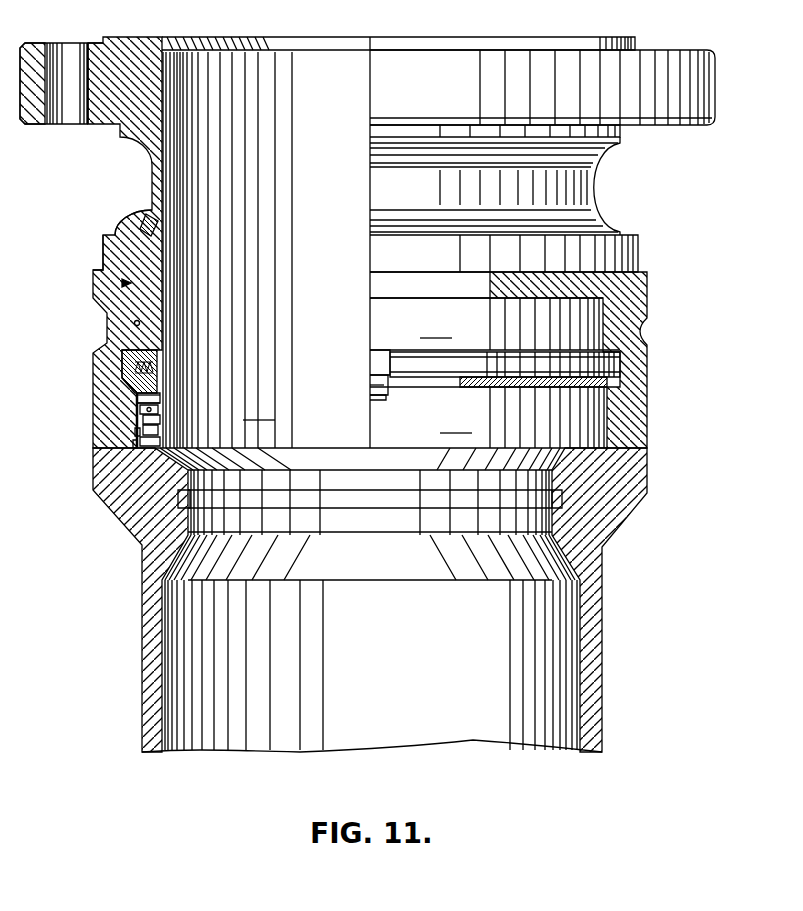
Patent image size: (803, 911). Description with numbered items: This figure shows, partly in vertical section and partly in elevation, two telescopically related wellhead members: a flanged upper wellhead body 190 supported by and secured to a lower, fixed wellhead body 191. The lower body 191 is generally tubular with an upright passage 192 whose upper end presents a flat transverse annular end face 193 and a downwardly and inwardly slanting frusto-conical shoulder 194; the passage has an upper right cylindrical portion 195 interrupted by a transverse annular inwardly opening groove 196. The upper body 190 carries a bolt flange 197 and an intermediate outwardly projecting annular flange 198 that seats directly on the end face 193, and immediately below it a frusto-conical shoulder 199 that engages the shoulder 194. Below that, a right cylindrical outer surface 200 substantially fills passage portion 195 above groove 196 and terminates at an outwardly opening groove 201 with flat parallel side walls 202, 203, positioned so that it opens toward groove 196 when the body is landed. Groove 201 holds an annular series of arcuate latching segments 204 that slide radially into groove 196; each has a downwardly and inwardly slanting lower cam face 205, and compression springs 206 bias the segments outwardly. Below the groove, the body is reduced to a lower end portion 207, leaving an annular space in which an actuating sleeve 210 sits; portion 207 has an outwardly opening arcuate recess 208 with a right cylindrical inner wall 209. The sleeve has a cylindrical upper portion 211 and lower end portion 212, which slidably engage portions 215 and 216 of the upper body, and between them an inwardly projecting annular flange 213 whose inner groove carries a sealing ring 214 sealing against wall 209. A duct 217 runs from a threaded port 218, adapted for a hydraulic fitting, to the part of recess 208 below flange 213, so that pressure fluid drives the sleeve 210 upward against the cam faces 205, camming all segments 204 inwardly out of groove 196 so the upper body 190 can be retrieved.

The upper wellhead body 190 is at (103, 250).
The lower wellhead body 191 is at (131, 537).
The upright passage 192 is at (398, 716).
The transverse annular end face 193 is at (95, 270).
The frusto-conical shoulder 194 is at (124, 283).
The upper right cylindrical portion 195 is at (134, 320).
The inwardly opening groove 196 is at (620, 366).
The bolt flange 197 is at (40, 43).
The annular flange 198 is at (113, 234).
The frusto-conical shoulder 199 is at (378, 282).
The right cylindrical outer surface 200 is at (400, 242).
The outwardly opening groove 201 is at (373, 372).
The side wall 202 is at (375, 352).
The side wall 203 is at (378, 388).
The latching segments 204 is at (122, 368).
The lower cam face 205 is at (137, 405).
The compression springs 206 is at (150, 365).
The lower end portion 207 is at (236, 250).
The arcuate recess 208 is at (377, 402).
The right cylindrical inner wall 209 is at (152, 405).
The actuating sleeve 210 is at (138, 440).
The upper portion of sleeve 211 is at (137, 417).
The lower end portion of sleeve 212 is at (133, 448).
The inwardly projecting annular flange 213 is at (157, 430).
The sealing ring 214 is at (155, 418).
The portion of lower end portion 215 is at (148, 393).
The portion of lower end portion 216 is at (152, 443).
The duct 217 is at (163, 328).
The threaded port 218 is at (145, 221).